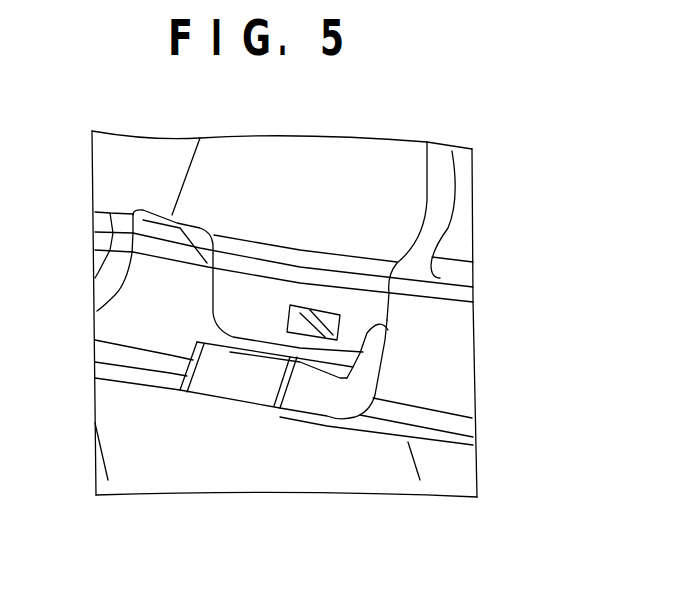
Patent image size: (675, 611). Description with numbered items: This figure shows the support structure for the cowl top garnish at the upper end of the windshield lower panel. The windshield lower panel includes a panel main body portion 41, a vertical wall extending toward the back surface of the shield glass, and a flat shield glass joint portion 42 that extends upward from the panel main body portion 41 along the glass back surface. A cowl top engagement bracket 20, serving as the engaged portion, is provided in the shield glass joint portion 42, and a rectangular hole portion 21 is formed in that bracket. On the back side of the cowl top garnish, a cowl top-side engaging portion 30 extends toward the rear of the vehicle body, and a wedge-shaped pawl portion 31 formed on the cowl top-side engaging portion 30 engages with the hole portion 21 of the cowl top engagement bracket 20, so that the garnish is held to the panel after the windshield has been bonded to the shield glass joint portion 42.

The cowl top engagement bracket 20 is at (253, 160).
The hole portion 21 is at (343, 315).
The cowl top-side engaging portion 30 is at (327, 402).
The pawl portion 31 is at (317, 330).
The panel main body portion 41 is at (142, 423).
The shield glass joint portion 42 is at (442, 158).